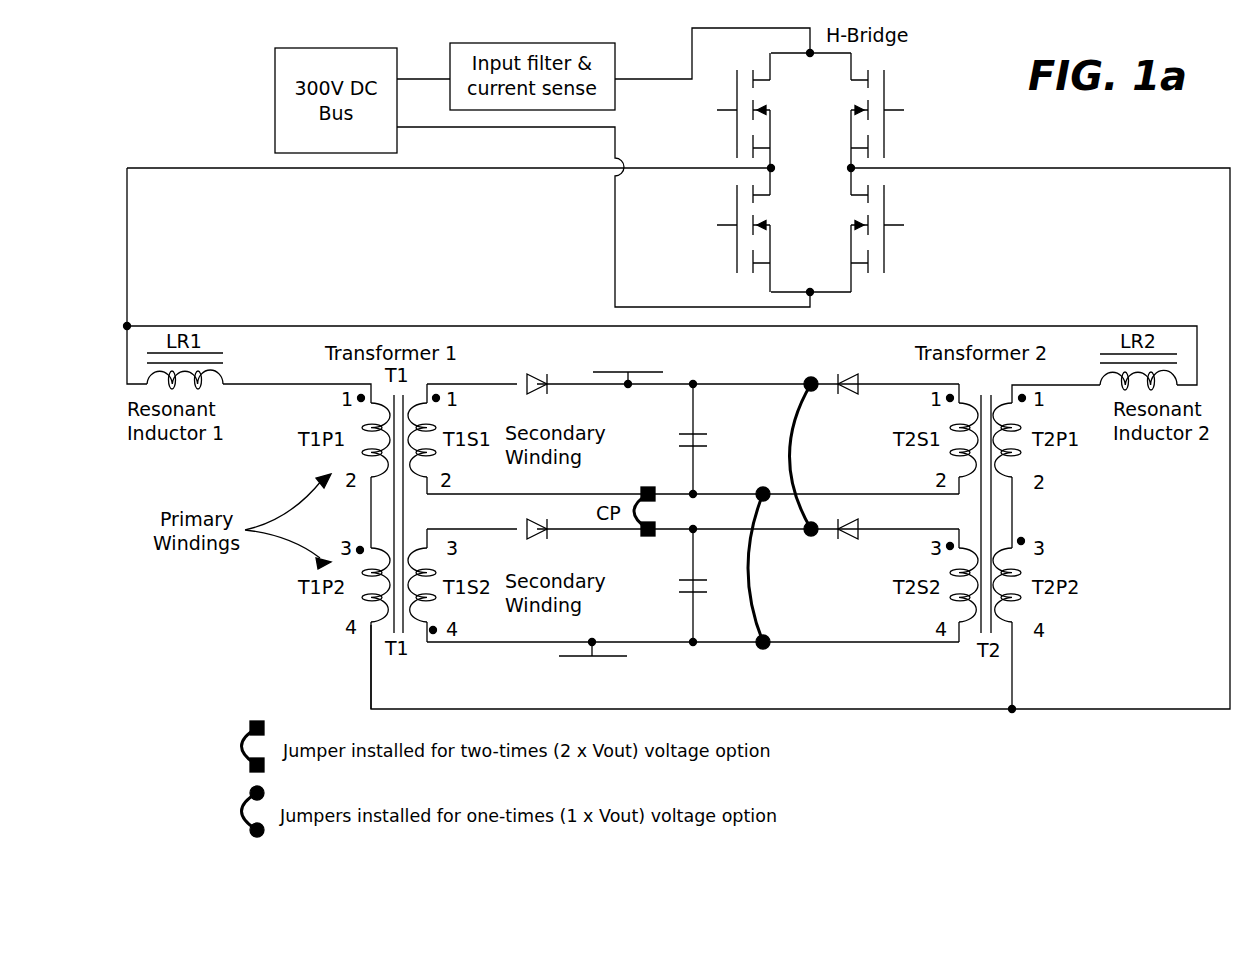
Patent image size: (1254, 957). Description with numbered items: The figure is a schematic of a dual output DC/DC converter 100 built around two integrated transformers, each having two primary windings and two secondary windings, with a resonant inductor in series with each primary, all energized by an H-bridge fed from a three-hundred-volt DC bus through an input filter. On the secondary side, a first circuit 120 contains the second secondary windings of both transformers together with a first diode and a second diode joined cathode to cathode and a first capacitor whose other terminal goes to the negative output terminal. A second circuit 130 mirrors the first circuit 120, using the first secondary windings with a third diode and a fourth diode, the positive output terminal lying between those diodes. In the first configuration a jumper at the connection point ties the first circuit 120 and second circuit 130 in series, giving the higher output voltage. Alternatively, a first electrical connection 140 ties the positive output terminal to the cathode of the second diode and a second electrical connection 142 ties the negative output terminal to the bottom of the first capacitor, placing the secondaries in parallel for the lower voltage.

The dual output DC/DC converter 100 is at (1027, 272).
The first circuit 120 is at (861, 586).
The second circuit 130 is at (861, 439).
The first electrical connection 140 is at (792, 425).
The second electrical connection 142 is at (755, 607).